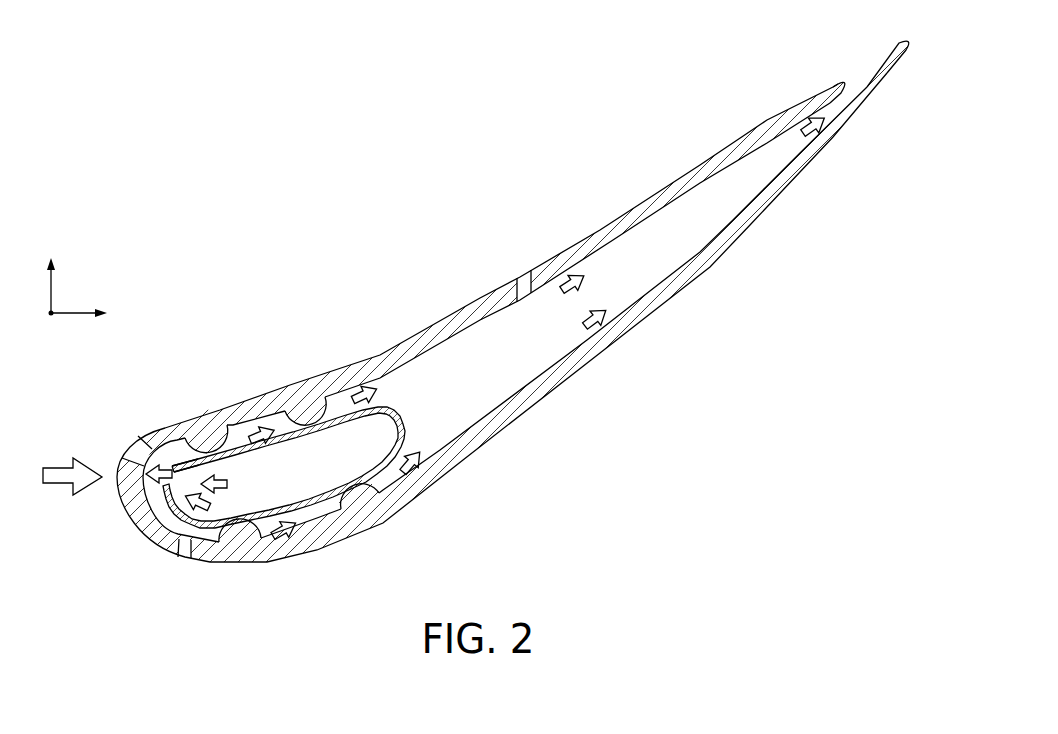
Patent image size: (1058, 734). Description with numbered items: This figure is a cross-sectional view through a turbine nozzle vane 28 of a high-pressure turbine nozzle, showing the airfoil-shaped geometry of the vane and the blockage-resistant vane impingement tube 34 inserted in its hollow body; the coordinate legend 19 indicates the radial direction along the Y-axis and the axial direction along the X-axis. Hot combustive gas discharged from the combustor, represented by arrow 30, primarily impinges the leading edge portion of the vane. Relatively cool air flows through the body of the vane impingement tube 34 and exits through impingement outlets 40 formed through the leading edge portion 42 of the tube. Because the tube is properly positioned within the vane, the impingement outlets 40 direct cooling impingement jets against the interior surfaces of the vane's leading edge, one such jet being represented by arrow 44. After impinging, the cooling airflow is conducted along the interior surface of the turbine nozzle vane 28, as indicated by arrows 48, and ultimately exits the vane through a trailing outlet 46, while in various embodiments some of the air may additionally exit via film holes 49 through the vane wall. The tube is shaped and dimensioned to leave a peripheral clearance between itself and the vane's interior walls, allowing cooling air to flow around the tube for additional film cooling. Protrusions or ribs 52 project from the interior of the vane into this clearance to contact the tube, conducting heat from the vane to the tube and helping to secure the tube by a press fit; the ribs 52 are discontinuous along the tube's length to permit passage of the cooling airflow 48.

The coordinate legend 19 is at (56, 292).
The turbine nozzle vane 28 is at (425, 330).
The combustive gas flow 30 is at (56, 462).
The vane impingement tube 34 is at (407, 422).
The impingement outlets 40 is at (176, 479).
The leading edge portion of tube 42 is at (157, 503).
The cooling jet 44 is at (168, 466).
The trailing outlet 46 is at (853, 82).
The cooling airflow arrows 48 is at (258, 428).
The film holes 49 is at (130, 447).
The protrusions or ribs 52 is at (206, 440).